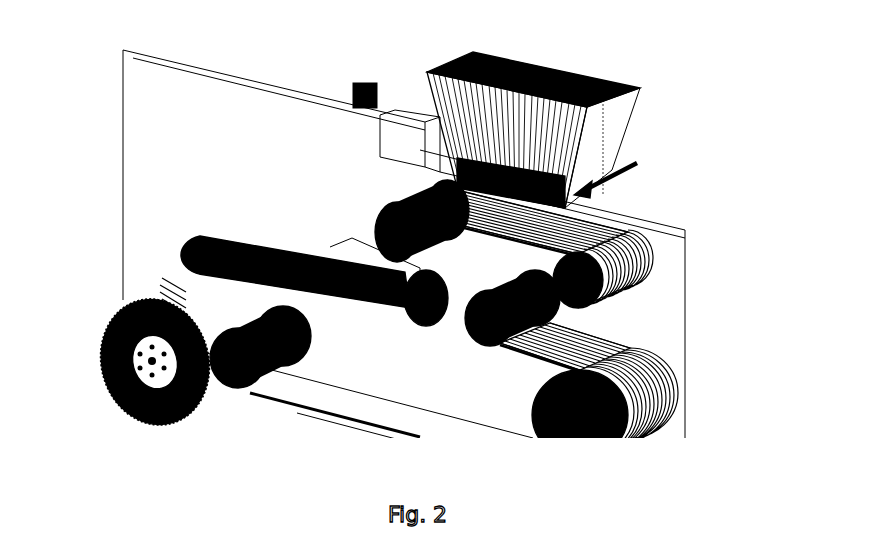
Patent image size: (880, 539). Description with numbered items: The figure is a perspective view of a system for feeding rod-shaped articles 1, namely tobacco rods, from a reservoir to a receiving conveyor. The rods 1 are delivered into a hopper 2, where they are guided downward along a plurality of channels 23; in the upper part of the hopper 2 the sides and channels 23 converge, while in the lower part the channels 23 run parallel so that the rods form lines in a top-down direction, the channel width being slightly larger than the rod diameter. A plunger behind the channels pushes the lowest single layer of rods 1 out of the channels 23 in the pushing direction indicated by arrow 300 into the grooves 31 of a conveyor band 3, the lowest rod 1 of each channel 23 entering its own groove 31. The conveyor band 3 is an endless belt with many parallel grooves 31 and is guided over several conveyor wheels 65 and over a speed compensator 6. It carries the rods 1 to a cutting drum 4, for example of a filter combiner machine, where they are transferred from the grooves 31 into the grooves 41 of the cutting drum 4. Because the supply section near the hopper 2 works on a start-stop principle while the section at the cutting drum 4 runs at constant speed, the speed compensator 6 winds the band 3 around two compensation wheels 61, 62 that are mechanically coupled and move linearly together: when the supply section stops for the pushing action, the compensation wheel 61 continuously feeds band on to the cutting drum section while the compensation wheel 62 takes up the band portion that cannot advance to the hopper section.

The rod-shaped articles 1 is at (612, 224).
The hopper 2 is at (602, 98).
The channels 23 is at (462, 160).
The conveyor band 3 is at (420, 187).
The grooves 31 is at (390, 233).
The arrow 300 is at (642, 165).
The cutting drum 4 is at (115, 363).
The grooves of the cutting drum 41 is at (160, 293).
The speed compensator 6 is at (463, 305).
The compensation wheel 61 is at (503, 318).
The compensation wheel 62 is at (422, 300).
The conveyor wheels 65 is at (565, 280).